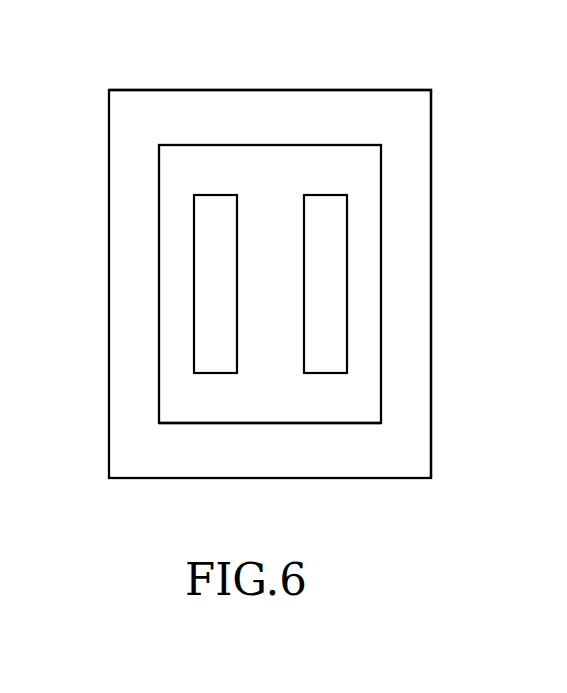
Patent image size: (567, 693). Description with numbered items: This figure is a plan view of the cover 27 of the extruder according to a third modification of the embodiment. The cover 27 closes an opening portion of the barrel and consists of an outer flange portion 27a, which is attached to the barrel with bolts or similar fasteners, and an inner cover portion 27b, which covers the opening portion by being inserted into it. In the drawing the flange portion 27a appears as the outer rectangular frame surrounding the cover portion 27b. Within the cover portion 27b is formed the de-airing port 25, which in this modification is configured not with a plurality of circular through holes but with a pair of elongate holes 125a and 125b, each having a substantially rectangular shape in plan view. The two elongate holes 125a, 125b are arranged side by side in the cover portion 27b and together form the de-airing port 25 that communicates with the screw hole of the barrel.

The cover 27 is at (77, 92).
The flange portion 27a is at (380, 112).
The cover portion 27b is at (372, 171).
The elongate hole 125a is at (217, 212).
The elongate hole 125b is at (325, 207).
The de-airing port 25 is at (352, 380).